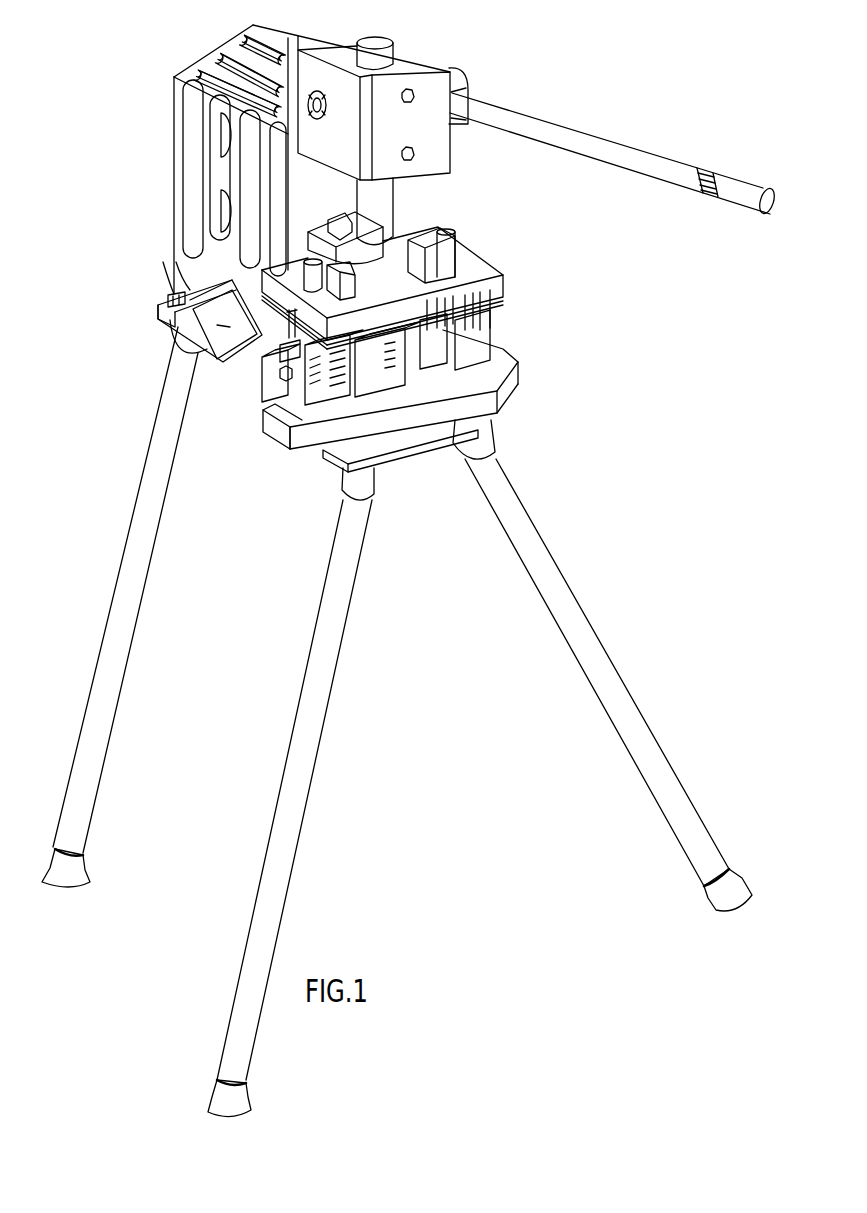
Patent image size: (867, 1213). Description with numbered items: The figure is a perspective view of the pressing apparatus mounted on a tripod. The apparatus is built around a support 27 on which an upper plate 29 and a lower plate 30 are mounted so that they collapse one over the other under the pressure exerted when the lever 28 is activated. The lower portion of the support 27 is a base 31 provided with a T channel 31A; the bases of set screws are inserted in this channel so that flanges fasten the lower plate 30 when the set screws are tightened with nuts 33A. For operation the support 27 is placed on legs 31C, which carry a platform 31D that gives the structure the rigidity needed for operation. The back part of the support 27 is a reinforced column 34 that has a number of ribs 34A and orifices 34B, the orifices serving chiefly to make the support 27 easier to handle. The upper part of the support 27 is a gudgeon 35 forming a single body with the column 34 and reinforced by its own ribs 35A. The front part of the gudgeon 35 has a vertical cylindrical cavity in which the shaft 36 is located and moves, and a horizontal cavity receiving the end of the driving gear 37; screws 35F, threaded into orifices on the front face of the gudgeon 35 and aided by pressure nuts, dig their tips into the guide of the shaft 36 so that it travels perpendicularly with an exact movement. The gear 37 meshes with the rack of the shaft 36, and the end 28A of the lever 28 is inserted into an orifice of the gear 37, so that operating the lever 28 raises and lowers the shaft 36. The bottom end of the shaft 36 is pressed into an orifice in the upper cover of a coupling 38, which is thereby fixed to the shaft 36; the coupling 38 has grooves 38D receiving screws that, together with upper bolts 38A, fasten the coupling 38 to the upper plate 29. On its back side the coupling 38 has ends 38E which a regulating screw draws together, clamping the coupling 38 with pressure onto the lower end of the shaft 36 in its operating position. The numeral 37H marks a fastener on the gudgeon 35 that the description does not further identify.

The support 27 is at (165, 100).
The lever 28 is at (565, 135).
The end of the lever 28A is at (732, 200).
The upper plate 29 is at (470, 278).
The lower plate 30 is at (515, 357).
The base 31 is at (340, 432).
The T channel 31A is at (287, 420).
The legs 31C is at (132, 578).
The platform 31D is at (352, 470).
The nuts 33A is at (248, 396).
The reinforced column 34 is at (190, 118).
The ribs 34A is at (208, 178).
The orifices 34B is at (208, 140).
The gudgeon 35 is at (340, 55).
The ribs 35A is at (232, 68).
The screws 35F is at (327, 105).
The shaft 36 is at (394, 41).
The driving gear 37 is at (455, 75).
The clamp nuts 37H is at (412, 96).
The coupling 38 is at (413, 248).
The upper bolts 38A is at (235, 312).
The grooves 38D is at (268, 325).
The ends 38E is at (350, 216).